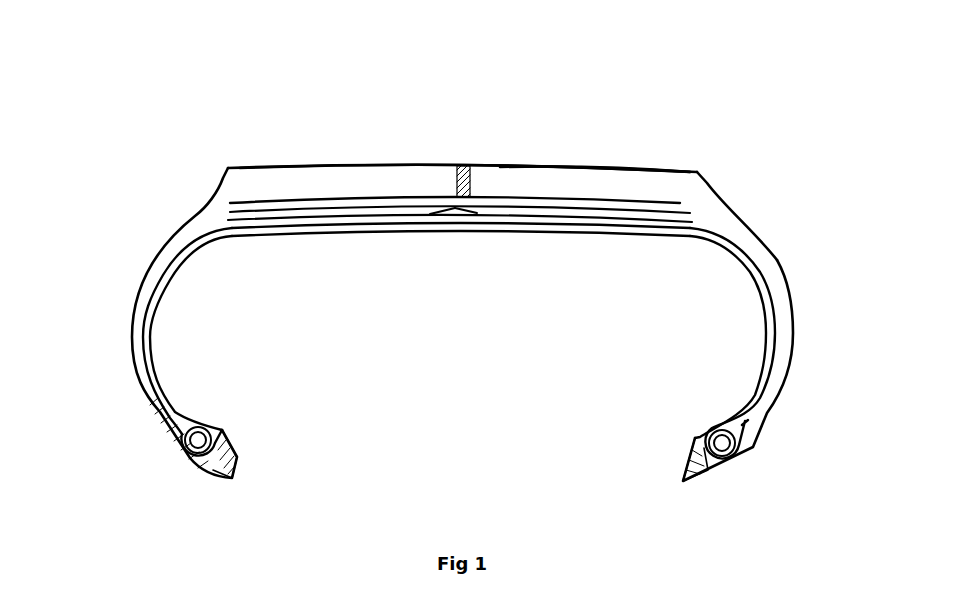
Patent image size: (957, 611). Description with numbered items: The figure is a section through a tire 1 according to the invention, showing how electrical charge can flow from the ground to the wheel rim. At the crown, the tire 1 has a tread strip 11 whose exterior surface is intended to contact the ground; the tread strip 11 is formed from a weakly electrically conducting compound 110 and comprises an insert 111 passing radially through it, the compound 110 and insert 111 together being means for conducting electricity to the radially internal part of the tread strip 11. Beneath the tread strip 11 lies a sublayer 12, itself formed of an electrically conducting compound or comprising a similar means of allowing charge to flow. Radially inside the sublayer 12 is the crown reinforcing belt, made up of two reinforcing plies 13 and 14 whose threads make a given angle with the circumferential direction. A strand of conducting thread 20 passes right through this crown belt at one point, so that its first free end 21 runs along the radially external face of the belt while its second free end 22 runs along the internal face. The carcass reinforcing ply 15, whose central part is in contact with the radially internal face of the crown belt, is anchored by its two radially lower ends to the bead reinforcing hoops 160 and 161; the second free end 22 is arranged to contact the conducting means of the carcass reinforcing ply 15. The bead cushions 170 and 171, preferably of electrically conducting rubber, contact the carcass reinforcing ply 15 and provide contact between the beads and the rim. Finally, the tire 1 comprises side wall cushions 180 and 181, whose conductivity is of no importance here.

The tire 1 is at (252, 72).
The tread strip 11 is at (600, 94).
The weakly electrically conducting compound 110 is at (537, 179).
The insert 111 is at (463, 166).
The sublayer 12 is at (688, 210).
The reinforcing ply 13 is at (243, 212).
The reinforcing ply 14 is at (237, 228).
The carcass reinforcing ply 15 is at (783, 342).
The strand of conducting thread 20 is at (440, 200).
The first free end 21 is at (477, 213).
The second free end 22 is at (455, 208).
The bead reinforcing hoop 160 is at (232, 432).
The bead reinforcing hoop 161 is at (697, 441).
The bead cushion 170 is at (238, 462).
The bead cushion 171 is at (683, 475).
The side wall cushion 180 is at (130, 340).
The side wall cushion 181 is at (785, 272).